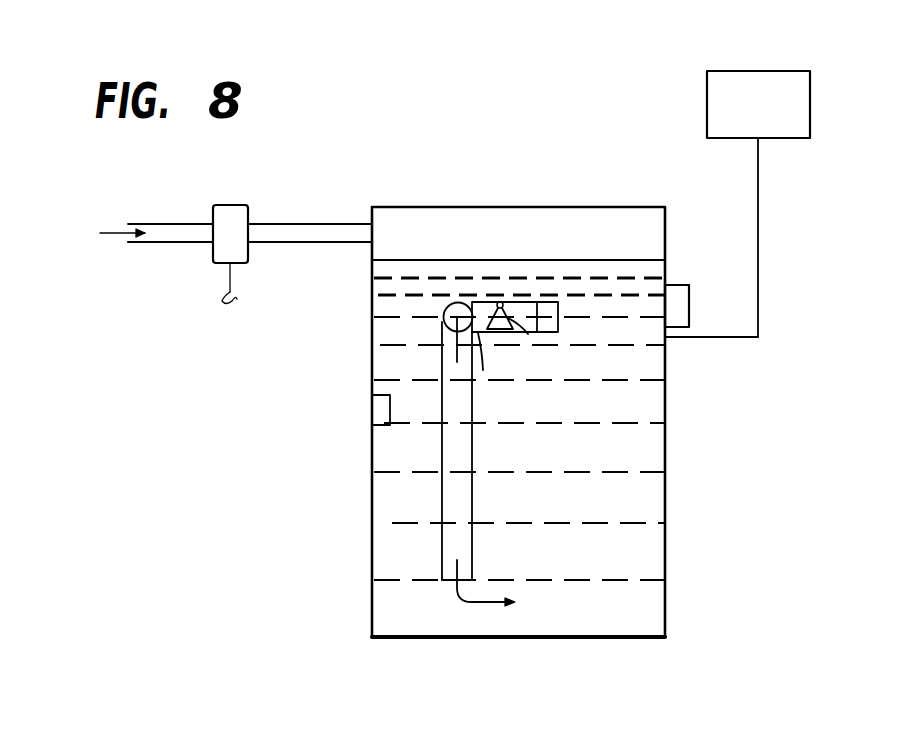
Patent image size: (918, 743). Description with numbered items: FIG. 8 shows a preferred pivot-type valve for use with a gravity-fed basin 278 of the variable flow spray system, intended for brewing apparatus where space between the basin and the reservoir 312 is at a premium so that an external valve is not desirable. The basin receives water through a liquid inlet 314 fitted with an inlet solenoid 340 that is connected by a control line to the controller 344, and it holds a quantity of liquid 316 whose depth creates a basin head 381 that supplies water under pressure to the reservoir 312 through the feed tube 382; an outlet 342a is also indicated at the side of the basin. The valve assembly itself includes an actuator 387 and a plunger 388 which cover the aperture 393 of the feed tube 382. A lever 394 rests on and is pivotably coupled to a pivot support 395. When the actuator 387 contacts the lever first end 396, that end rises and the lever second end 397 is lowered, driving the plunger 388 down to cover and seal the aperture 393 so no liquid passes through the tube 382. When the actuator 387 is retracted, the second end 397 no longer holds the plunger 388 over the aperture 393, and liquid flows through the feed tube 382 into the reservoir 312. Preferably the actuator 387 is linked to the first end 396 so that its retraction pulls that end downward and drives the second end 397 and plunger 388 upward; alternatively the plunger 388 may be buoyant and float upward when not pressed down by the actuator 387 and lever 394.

The reservoir 278 is at (620, 206).
The reservoir 312 is at (616, 640).
The liquid inlet 314 is at (178, 233).
The liquid 316 is at (540, 622).
The inlet solenoid 340 is at (230, 205).
The outlet port 342a is at (378, 407).
The controller 344 is at (760, 70).
The basin head 381 is at (689, 303).
The feed tube 382 is at (440, 400).
The actuator 387 is at (552, 323).
The plunger 388 is at (450, 317).
The aperture 393 is at (483, 370).
The lever 394 is at (500, 300).
The pivot support 395 is at (528, 334).
The lever first end 396 is at (546, 301).
The lever second end 397 is at (448, 303).